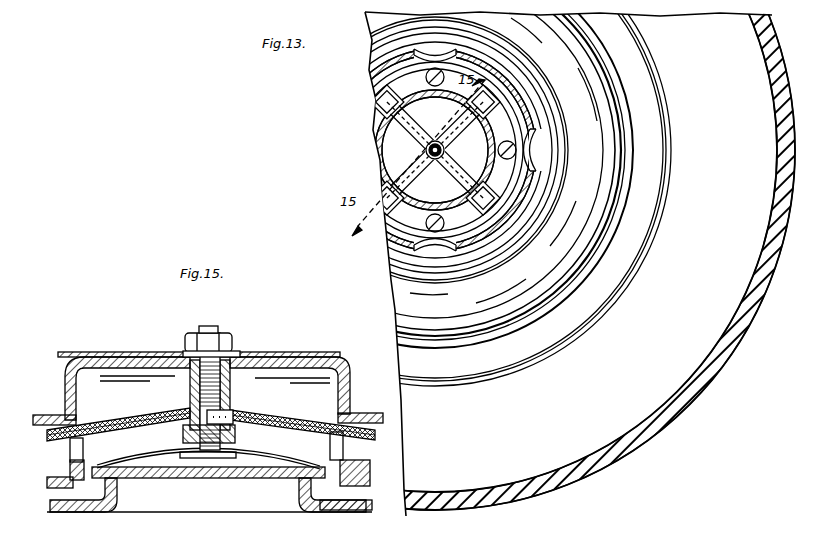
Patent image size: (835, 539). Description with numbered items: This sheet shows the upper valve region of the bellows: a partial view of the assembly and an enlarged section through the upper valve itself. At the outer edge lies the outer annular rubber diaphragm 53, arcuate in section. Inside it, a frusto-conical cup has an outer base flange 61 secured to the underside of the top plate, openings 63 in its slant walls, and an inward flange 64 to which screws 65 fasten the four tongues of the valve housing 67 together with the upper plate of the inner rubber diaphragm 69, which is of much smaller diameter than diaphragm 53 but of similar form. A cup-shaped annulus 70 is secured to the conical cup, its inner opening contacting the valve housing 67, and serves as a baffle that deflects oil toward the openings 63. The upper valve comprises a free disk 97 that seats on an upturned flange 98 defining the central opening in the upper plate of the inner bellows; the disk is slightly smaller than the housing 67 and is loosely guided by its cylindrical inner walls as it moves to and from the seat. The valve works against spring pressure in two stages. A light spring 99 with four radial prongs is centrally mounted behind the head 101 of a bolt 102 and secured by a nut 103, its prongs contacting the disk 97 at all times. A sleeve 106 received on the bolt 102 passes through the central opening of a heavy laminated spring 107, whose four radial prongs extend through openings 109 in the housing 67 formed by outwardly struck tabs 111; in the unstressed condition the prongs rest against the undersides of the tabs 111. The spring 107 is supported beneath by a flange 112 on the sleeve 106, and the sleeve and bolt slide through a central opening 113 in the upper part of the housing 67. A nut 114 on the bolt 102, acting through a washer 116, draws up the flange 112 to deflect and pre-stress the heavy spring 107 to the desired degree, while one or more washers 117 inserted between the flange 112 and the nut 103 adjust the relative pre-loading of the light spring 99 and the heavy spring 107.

In FIG. 13, the outer annular rubber diaphragm 53 is at (768, 272).
In FIG. 13, the outer base flange 61 is at (523, 200).
In FIG. 15, the outer base flange 61 is at (80, 399).
In FIG. 13, the openings 63 is at (532, 150).
In FIG. 15, the inward flange 64 is at (52, 500).
In FIG. 13, the screws 65 is at (426, 78).
In FIG. 13, the valve housing 67 is at (487, 122).
In FIG. 13, the inner rubber diaphragm 69 is at (610, 242).
In FIG. 15, the cup-shaped annulus 70 is at (305, 352).
In FIG. 13, the disk 97 is at (393, 161).
In FIG. 15, the disk 97 is at (172, 479).
In FIG. 15, the upturned flange 98 is at (112, 497).
In FIG. 13, the light spring 99 is at (420, 149).
In FIG. 15, the light spring 99 is at (282, 470).
In FIG. 15, the head 101 is at (214, 460).
In FIG. 13, the bolt 102 is at (435, 160).
In FIG. 15, the bolt 102 is at (203, 326).
In FIG. 15, the nut 103 is at (160, 452).
In FIG. 13, the sleeve 106 is at (444, 150).
In FIG. 15, the sleeve 106 is at (232, 380).
In FIG. 13, the heavy laminated spring 107 is at (457, 120).
In FIG. 15, the heavy laminated spring 107 is at (258, 415).
In FIG. 13, the openings 109 is at (480, 166).
In FIG. 15, the openings 109 is at (70, 452).
In FIG. 13, the tabs 111 is at (492, 192).
In FIG. 15, the tabs 111 is at (66, 408).
In FIG. 15, the flange 112 is at (200, 428).
In FIG. 15, the central opening 113 is at (190, 372).
In FIG. 15, the nut 114 is at (231, 336).
In FIG. 15, the washer 116 is at (243, 352).
In FIG. 15, the washers 117 is at (236, 431).